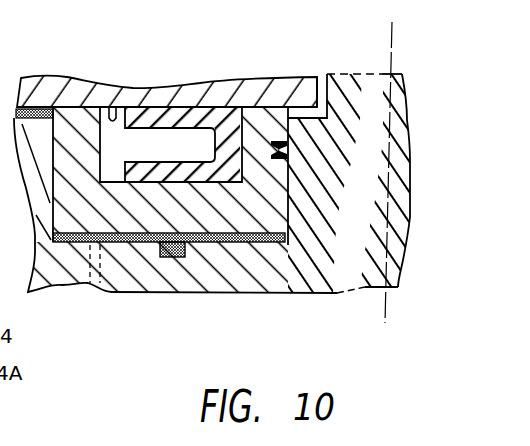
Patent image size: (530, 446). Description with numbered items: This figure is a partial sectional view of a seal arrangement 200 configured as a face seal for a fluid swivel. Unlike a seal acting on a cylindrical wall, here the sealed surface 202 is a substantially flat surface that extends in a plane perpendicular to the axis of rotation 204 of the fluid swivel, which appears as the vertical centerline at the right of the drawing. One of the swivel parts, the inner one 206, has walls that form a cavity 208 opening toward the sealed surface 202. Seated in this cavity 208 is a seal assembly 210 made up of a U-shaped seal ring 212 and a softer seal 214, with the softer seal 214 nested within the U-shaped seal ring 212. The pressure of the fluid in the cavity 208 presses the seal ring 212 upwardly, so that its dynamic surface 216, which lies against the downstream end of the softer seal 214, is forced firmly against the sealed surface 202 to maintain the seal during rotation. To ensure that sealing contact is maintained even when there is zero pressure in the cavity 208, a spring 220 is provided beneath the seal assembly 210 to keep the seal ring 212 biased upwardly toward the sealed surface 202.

The seal arrangement 200 is at (186, 306).
The sealed surface 202 is at (114, 113).
The axis of rotation 204 is at (397, 33).
The inner swivel part 206 is at (238, 298).
The cavity 208 is at (252, 232).
The seal assembly 210 is at (221, 90).
The U-shaped seal ring 212 is at (67, 107).
The softer seal 214 is at (171, 92).
The dynamic surface 216 is at (278, 77).
The spring 220 is at (171, 258).